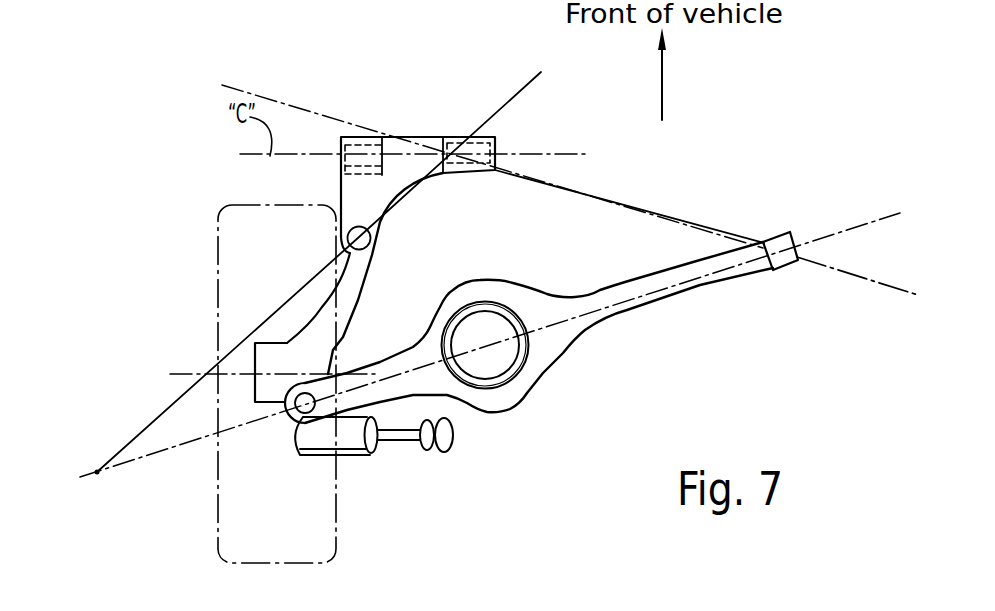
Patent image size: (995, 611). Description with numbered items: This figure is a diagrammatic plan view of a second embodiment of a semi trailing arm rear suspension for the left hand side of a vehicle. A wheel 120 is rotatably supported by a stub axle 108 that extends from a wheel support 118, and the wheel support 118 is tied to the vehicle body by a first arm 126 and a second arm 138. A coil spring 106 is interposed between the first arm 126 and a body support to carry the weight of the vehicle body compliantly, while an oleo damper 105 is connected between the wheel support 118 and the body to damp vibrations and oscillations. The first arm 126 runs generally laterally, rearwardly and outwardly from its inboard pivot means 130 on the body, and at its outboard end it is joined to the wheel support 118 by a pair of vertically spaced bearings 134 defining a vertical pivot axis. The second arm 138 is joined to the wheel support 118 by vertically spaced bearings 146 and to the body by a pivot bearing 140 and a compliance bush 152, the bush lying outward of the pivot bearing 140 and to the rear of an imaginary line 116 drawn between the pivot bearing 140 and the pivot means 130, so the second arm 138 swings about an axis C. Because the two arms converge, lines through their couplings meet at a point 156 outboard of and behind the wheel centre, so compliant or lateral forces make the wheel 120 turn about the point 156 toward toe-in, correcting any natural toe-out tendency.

The oleo damper 105 is at (378, 457).
The coil spring 106 is at (523, 377).
The stub axle 108 is at (263, 340).
The imaginary line 116 is at (707, 204).
The wheel support 118 is at (350, 288).
The wheel 120 is at (300, 537).
The first arm 126 is at (645, 308).
The pivot means 130 is at (767, 235).
The bearings 134 is at (302, 412).
The second arm 138 is at (412, 148).
The pivot bearing 140 is at (496, 137).
The bearing 146 is at (363, 238).
The compliance bush 152 is at (360, 143).
The point 156 is at (100, 476).